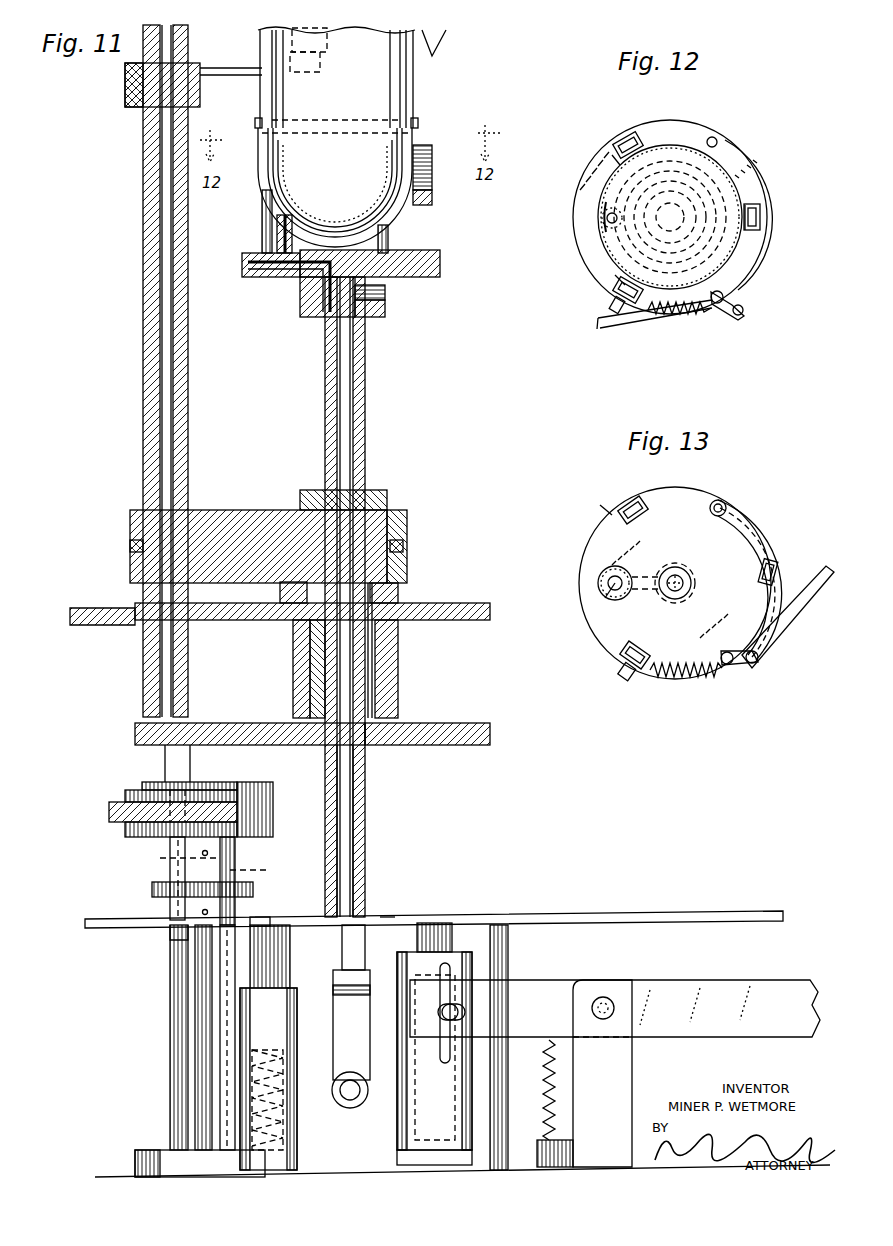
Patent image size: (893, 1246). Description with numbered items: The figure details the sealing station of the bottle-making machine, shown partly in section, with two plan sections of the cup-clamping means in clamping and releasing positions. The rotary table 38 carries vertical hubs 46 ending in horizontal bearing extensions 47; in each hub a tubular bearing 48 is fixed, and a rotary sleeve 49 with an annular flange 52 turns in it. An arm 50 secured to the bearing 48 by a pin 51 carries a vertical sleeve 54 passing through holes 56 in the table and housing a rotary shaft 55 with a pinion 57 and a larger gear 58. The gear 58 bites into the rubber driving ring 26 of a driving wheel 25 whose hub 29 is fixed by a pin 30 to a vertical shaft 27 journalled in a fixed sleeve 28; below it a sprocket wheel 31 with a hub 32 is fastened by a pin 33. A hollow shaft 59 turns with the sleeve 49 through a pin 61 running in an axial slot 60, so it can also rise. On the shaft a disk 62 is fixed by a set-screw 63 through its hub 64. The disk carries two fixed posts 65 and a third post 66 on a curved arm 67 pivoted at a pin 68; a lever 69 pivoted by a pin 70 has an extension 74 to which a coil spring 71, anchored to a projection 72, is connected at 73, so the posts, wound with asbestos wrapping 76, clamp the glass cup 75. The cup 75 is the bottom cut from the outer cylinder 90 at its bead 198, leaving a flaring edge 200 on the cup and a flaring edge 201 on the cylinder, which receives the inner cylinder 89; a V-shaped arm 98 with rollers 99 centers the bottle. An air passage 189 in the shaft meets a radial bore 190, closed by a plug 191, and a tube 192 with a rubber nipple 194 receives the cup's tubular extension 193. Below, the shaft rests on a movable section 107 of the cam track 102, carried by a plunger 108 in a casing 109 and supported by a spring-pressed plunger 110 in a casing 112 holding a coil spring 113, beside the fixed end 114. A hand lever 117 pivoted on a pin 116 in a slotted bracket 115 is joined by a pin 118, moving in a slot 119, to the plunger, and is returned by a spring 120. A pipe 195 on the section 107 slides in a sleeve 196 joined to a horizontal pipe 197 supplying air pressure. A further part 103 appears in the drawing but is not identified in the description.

In FIG. 11, the vertical sleeve 54 is at (143, 152).
In FIG. 11, the rotary shaft 55 is at (165, 186).
In FIG. 11, the V-shaped arm 98 is at (242, 66).
In FIG. 11, the rollers 99 is at (327, 44).
In FIG. 11, the outer cylinder 90 is at (262, 80).
In FIG. 11, the inner cylinder 89 is at (414, 72).
In FIG. 11, the flaring edge 201 is at (418, 120).
In FIG. 11, the outwardly flaring edge 200 is at (418, 134).
In FIG. 11, the asbestos wrapping 76 is at (432, 168).
In FIG. 12, the asbestos wrapping 76 is at (640, 138).
In FIG. 13, the asbestos wrapping 76 is at (618, 515).
In FIG. 11, the curved arm 67 is at (432, 198).
In FIG. 12, the curved arm 67 is at (745, 263).
In FIG. 13, the curved arm 67 is at (750, 530).
In FIG. 11, the cup-shaped member 75 is at (392, 212).
In FIG. 11, the tubular extension 193 is at (300, 206).
In FIG. 12, the tubular extension 193 is at (612, 228).
In FIG. 11, the rubber nipple 194 is at (262, 234).
In FIG. 12, the rubber nipple 194 is at (606, 218).
In FIG. 13, the rubber nipple 194 is at (600, 590).
In FIG. 11, the tube 192 is at (277, 245).
In FIG. 13, the tube 192 is at (610, 595).
In FIG. 11, the screw-threaded plug 191 is at (243, 266).
In FIG. 11, the radial bore 190 is at (270, 278).
In FIG. 13, the radial bore 190 is at (655, 575).
In FIG. 11, the pin 68 is at (388, 240).
In FIG. 12, the pin 68 is at (718, 140).
In FIG. 13, the pin 68 is at (726, 505).
In FIG. 11, the disk 62 is at (440, 262).
In FIG. 12, the disk 62 is at (600, 150).
In FIG. 13, the disk 62 is at (690, 488).
In FIG. 11, the set-screw 63 is at (385, 294).
In FIG. 11, the hub 64 is at (305, 305).
In FIG. 11, the hollow shaft 59 is at (366, 362).
In FIG. 12, the hollow shaft 59 is at (678, 230).
In FIG. 13, the hollow shaft 59 is at (686, 583).
In FIG. 11, the air passage 189 is at (340, 405).
In FIG. 11, the annular flange 52 is at (388, 500).
In FIG. 11, the arm 50 is at (245, 515).
In FIG. 11, the pin 51 is at (408, 532).
In FIG. 11, the holes 56 is at (135, 610).
In FIG. 11, the table 38 is at (470, 603).
In FIG. 11, the horizontal bearing extensions 47 is at (398, 595).
In FIG. 11, the tubular bearing 48 is at (312, 648).
In FIG. 11, the vertical hubs 46 is at (295, 675).
In FIG. 11, the rotary sleeve 49 is at (398, 658).
In FIG. 11, the pin 61 is at (372, 700).
In FIG. 11, the pinion 57 is at (135, 732).
In FIG. 11, the gear 58 is at (125, 798).
In FIG. 11, the driving wheel 25 is at (195, 790).
In FIG. 11, the rubber driving ring 26 is at (218, 795).
In FIG. 11, the axial slot 60 is at (366, 785).
In FIG. 11, the hub 29 is at (170, 845).
In FIG. 11, the vertical shafts 27 is at (207, 880).
In FIG. 11, the pin 30 is at (208, 853).
In FIG. 11, the sprocket wheel 31 is at (152, 886).
In FIG. 11, the pin 33 is at (202, 912).
In FIG. 11, the cam track 102 is at (585, 914).
In FIG. 11, the movable track section 107 is at (392, 912).
In FIG. 11, the plunger 108 is at (432, 923).
In FIG. 11, the fixed end 114 is at (258, 918).
In FIG. 11, the hub 32 is at (175, 932).
In FIG. 11, the fixed sleeves 28 is at (170, 998).
In FIG. 11, the column 103 is at (200, 1025).
In FIG. 11, the second plunger 110 is at (275, 953).
In FIG. 11, the fixed casing 112 is at (270, 1028).
In FIG. 11, the coil spring 113 is at (283, 1102).
In FIG. 11, the pipe 195 is at (365, 943).
In FIG. 11, the vertical sleeve 196 is at (336, 1063).
In FIG. 11, the horizontal pipe 197 is at (348, 1108).
In FIG. 11, the cylindrical casing 109 is at (400, 1150).
In FIG. 11, the slot 119 is at (445, 1065).
In FIG. 11, the pin 118 is at (462, 1012).
In FIG. 11, the lever 117 is at (718, 988).
In FIG. 11, the pin 116 is at (608, 997).
In FIG. 11, the slotted bracket 115 is at (602, 1073).
In FIG. 11, the coil spring 120 is at (545, 1088).
In FIG. 12, the fixed posts 65 is at (628, 135).
In FIG. 13, the fixed posts 65 is at (638, 500).
In FIG. 12, the third post 66 is at (760, 212).
In FIG. 13, the third post 66 is at (776, 568).
In FIG. 12, the pin 70 is at (723, 295).
In FIG. 13, the pin 70 is at (752, 665).
In FIG. 12, the extension 74 is at (742, 310).
In FIG. 13, the extension 74 is at (735, 668).
In FIG. 12, the spring connection 73 is at (740, 316).
In FIG. 13, the spring connection 73 is at (727, 652).
In FIG. 12, the coil spring 71 is at (665, 320).
In FIG. 13, the coil spring 71 is at (690, 675).
In FIG. 12, the projection 72 is at (620, 312).
In FIG. 13, the projection 72 is at (626, 680).
In FIG. 12, the lever 69 is at (605, 322).
In FIG. 13, the lever 69 is at (790, 620).
In FIG. 13, the outer annular bead 198 is at (690, 570).